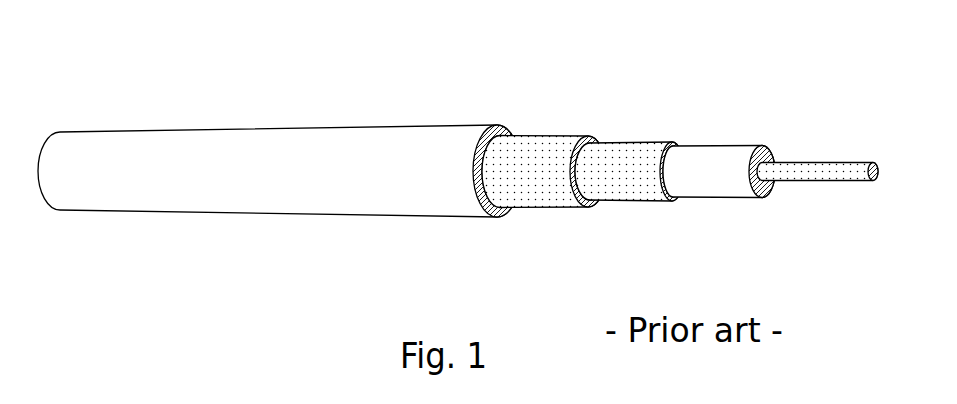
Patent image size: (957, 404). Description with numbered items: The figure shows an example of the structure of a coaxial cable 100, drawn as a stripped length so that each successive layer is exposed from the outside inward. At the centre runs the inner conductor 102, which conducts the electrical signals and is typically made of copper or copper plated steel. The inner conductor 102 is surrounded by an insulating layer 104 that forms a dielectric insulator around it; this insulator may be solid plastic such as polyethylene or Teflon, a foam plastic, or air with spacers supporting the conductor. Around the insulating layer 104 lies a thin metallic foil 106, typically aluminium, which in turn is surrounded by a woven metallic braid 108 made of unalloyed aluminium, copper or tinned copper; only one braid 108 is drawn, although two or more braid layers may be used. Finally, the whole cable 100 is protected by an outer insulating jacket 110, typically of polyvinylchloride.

The cable 100 is at (458, 142).
The inner conductor 102 is at (817, 188).
The insulating layer 104 is at (719, 190).
The thin metallic foil 106 is at (629, 187).
The woven metallic braid 108 is at (544, 192).
The outer insulating jacket 110 is at (279, 188).